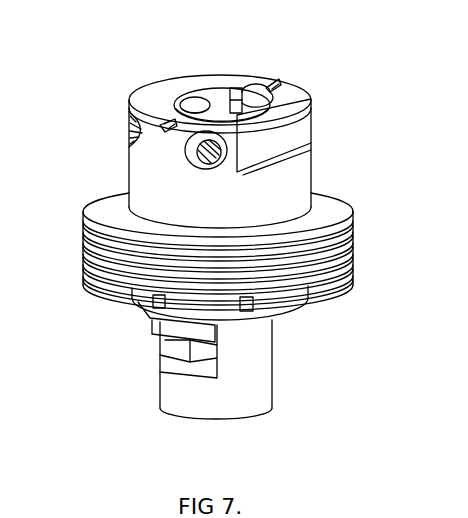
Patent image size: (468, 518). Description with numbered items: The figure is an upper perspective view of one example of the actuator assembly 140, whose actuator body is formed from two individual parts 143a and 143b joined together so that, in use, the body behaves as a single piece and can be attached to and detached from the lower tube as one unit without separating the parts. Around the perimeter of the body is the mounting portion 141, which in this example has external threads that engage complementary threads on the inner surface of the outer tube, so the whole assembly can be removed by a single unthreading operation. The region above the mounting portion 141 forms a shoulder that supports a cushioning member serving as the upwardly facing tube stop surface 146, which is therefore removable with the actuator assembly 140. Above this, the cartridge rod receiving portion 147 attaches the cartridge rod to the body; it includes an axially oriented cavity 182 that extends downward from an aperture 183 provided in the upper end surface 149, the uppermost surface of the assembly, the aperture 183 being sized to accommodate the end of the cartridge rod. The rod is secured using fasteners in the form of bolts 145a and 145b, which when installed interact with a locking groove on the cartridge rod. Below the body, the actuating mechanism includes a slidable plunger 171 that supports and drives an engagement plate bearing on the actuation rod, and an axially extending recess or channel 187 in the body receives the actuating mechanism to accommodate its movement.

The actuator assembly 140 is at (357, 68).
The mounting portion 141 is at (353, 250).
The first actuator body part 143a is at (312, 138).
The second actuator body part 143b is at (138, 302).
The bolt 145a is at (217, 145).
The bolt 145b is at (135, 133).
The tube stop surface 146 is at (320, 207).
The cartridge rod receiving portion 147 is at (185, 77).
The upper end surface 149 is at (147, 95).
The slidable plunger 171 is at (177, 410).
The axially oriented cavity 182 is at (218, 95).
The aperture 183 is at (242, 97).
The channel 187 is at (163, 123).